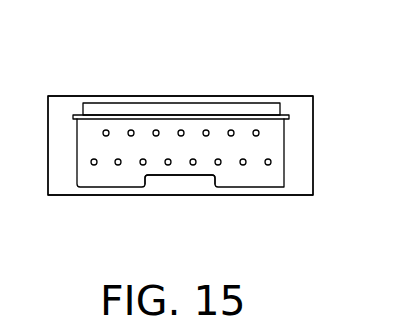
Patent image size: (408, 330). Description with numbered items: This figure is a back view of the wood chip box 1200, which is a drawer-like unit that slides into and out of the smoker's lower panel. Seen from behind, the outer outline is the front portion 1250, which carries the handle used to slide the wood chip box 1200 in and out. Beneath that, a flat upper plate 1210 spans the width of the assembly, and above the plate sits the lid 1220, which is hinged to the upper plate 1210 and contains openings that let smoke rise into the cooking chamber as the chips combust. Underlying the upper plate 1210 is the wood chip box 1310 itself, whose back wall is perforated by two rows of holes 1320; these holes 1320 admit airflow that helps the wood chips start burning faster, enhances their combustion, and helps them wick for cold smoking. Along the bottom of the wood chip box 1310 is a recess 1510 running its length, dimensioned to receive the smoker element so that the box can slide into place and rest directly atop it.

The wood chip box 1200 is at (313, 71).
The front portion 1250 is at (100, 96).
The upper plate 1210 is at (153, 102).
The lid 1220 is at (240, 99).
The wood chip box 1310 is at (211, 180).
The holes 1320 is at (118, 167).
The recess 1510 is at (180, 176).